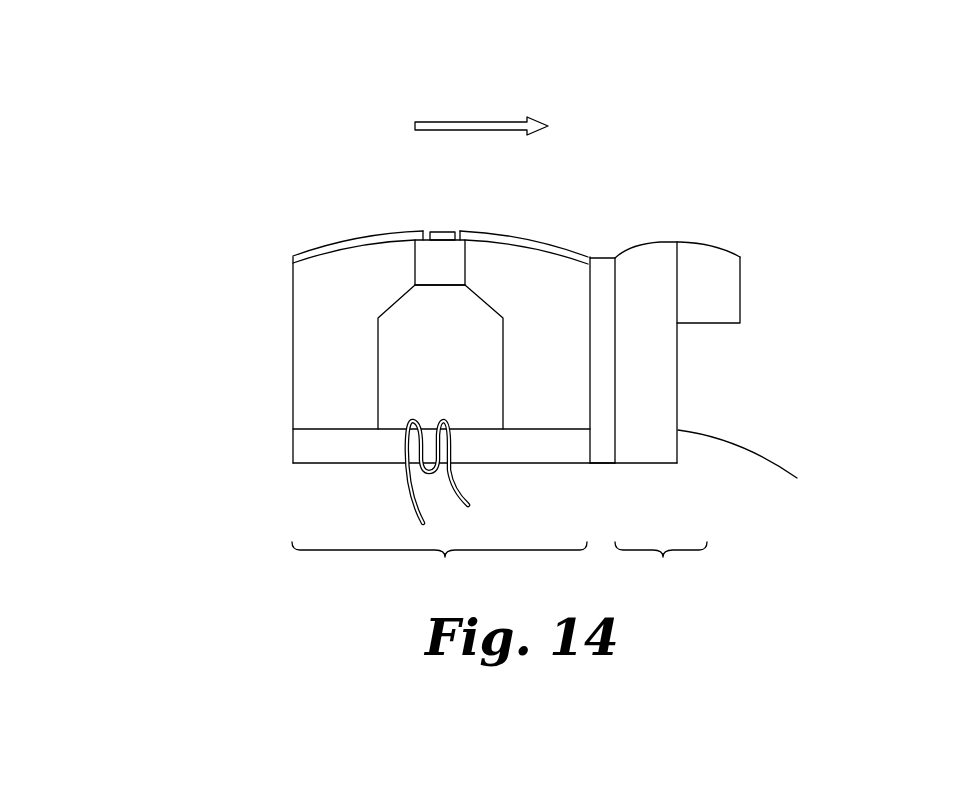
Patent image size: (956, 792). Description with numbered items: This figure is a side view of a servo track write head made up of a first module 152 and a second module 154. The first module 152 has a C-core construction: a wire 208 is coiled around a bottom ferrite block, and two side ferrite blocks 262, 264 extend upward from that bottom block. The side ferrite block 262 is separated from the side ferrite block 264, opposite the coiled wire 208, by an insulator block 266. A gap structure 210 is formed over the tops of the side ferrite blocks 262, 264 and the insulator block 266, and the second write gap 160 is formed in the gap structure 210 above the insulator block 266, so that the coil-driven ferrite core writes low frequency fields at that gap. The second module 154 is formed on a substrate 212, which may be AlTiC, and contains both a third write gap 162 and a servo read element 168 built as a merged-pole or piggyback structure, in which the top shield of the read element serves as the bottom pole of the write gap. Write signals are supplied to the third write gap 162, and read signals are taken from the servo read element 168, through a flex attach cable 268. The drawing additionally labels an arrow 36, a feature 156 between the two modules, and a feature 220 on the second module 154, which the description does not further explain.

The direction of feed arrow 36 is at (477, 120).
The first module 152 is at (439, 564).
The second module 154 is at (661, 564).
The junction between portions 156 is at (602, 468).
The second write gap 160 is at (460, 223).
The third write gap 162 is at (710, 315).
The servo read element 168 is at (672, 236).
The wire 208 is at (408, 498).
The gap structure 210 is at (313, 248).
The substrate 212 is at (425, 223).
The ledge 220 is at (708, 327).
The side ferrite block 262 is at (293, 324).
The side ferrite block 264 is at (448, 287).
The insulator block 266 is at (293, 436).
The flex attach cable 268 is at (740, 443).